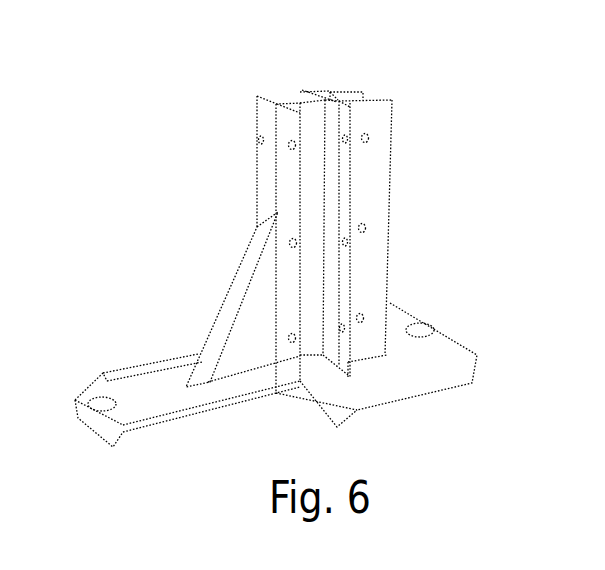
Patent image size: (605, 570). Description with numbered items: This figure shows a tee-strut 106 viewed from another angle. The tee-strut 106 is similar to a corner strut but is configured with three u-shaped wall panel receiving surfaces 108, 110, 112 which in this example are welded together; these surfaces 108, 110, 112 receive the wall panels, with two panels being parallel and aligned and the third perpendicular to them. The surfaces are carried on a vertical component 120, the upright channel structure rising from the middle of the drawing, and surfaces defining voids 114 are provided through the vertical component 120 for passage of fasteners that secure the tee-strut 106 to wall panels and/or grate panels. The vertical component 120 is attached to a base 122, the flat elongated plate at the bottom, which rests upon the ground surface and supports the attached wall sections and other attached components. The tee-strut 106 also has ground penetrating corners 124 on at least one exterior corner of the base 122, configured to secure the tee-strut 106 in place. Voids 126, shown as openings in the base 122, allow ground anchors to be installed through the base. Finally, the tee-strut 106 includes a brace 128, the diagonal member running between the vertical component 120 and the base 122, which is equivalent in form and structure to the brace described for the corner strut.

The tee-strut 106 is at (267, 173).
The u-shaped wall panel receiving surface 108 is at (300, 100).
The u-shaped wall panel receiving surface 110 is at (312, 285).
The u-shaped wall panel receiving surface 112 is at (337, 100).
The void 114 is at (263, 137).
The vertical component 120 is at (390, 152).
The base 122 is at (150, 408).
The ground penetrating corner 124 is at (337, 417).
The void 126 is at (434, 323).
The brace 128 is at (228, 303).